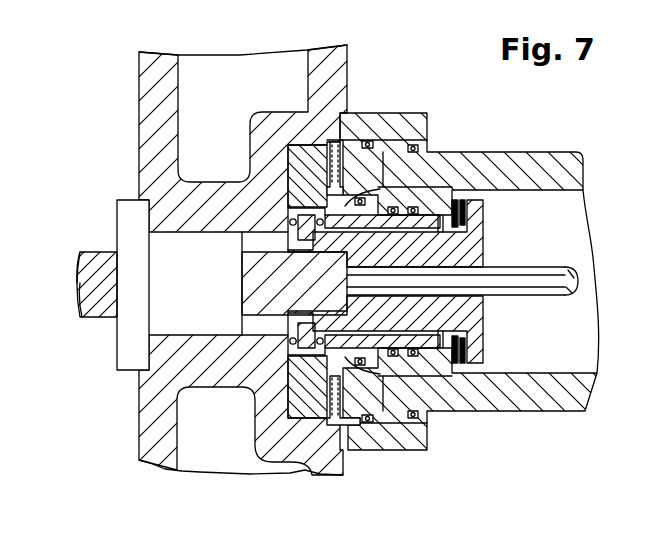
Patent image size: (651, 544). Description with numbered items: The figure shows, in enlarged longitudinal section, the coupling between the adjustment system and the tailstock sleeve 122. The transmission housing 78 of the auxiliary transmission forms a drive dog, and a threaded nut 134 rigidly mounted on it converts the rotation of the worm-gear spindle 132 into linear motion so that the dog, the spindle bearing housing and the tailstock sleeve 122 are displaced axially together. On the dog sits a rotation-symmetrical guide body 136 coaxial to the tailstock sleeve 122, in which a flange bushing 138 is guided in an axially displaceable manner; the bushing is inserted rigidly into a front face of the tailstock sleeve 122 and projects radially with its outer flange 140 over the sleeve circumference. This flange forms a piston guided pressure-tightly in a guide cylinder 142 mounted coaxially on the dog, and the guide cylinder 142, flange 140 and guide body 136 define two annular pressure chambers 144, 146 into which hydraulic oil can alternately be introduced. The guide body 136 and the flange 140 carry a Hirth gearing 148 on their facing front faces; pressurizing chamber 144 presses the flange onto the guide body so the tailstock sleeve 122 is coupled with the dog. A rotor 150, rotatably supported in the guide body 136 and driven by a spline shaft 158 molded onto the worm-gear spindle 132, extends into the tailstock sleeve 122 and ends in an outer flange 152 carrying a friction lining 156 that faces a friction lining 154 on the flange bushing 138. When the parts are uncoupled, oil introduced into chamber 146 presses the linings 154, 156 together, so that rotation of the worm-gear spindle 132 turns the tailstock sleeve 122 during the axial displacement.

The transmission housing 78 is at (337, 58).
The tailstock sleeve 122 is at (558, 143).
The worm-gear spindle 132 is at (98, 260).
The threaded nut 134 is at (162, 302).
The guide body 136 is at (303, 395).
The flange bushing 138 is at (430, 365).
The outer flange 140 is at (377, 403).
The guide cylinder 142 is at (418, 437).
The annular pressure chamber 144 is at (392, 147).
The annular pressure chamber 146 is at (317, 196).
The Hirth gearing 148 is at (330, 163).
The rotor 150 is at (465, 255).
The outer flange 152 is at (475, 355).
The friction lining 154 is at (453, 203).
The friction lining 156 is at (463, 205).
The spline shaft 158 is at (550, 270).